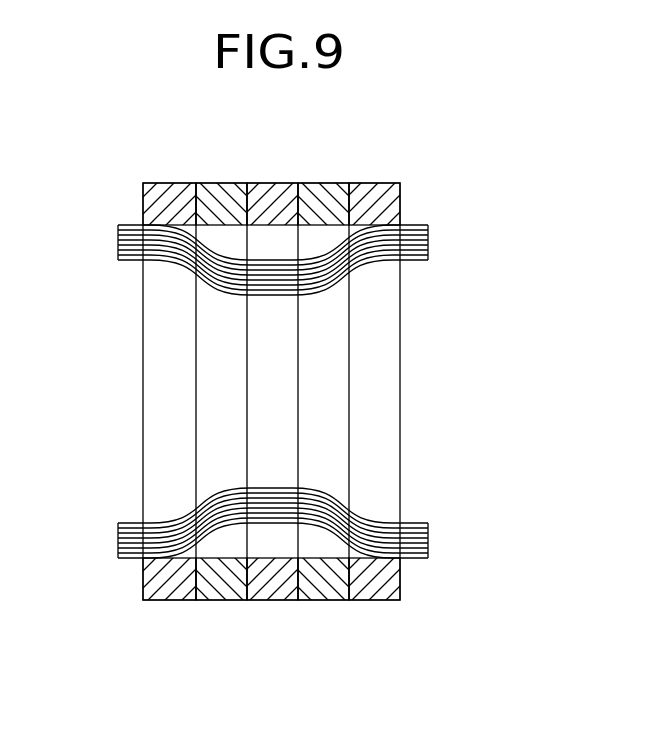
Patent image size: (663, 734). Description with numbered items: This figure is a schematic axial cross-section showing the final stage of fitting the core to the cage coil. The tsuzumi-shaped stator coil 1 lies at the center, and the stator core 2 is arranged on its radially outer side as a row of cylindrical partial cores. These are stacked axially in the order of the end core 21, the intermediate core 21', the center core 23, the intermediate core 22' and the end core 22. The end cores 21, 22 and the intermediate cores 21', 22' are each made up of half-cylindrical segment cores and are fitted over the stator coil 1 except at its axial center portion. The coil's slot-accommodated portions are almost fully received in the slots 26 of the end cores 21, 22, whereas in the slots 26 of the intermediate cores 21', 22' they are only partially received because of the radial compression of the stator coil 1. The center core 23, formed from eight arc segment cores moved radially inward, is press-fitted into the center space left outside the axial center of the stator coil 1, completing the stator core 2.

The stator coil 1 is at (428, 542).
The stator core 2 is at (328, 603).
The end core 21 is at (160, 171).
The intermediate core 21' is at (221, 174).
The end core 22 is at (386, 171).
The intermediate core 22' is at (323, 174).
The center core 23 is at (273, 189).
The slot 26 is at (225, 545).